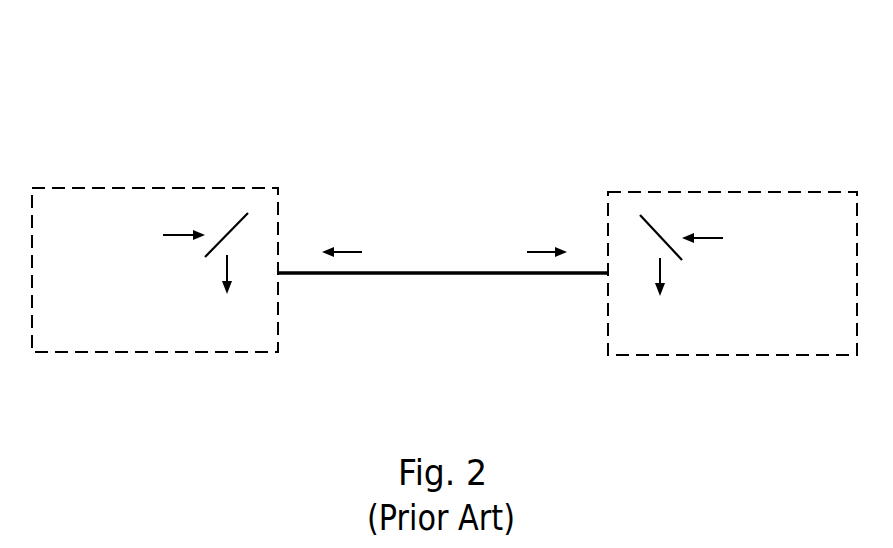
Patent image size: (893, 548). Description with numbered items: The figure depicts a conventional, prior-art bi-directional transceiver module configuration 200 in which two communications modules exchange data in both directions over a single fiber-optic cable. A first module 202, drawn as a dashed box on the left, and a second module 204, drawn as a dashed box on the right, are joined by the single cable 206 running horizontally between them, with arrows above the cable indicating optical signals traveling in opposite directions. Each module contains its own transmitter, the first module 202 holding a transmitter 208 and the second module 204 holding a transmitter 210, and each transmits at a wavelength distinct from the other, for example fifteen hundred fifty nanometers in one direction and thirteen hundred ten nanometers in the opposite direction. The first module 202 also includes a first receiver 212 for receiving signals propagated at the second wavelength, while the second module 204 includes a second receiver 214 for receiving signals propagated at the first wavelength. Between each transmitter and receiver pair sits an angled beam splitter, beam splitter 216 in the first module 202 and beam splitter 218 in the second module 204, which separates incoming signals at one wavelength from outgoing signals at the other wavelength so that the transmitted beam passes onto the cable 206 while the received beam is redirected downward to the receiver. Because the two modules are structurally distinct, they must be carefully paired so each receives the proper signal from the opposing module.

The bi-directional transceiver module configuration 200 is at (647, 100).
The first module 202 is at (130, 186).
The second module 204 is at (755, 190).
The single cable 206 is at (440, 272).
The transmitter 208 is at (80, 233).
The transmitter 210 is at (812, 238).
The first receiver 212 is at (227, 337).
The second receiver 214 is at (660, 337).
The beam splitter 216 is at (240, 217).
The beam splitter 218 is at (650, 223).